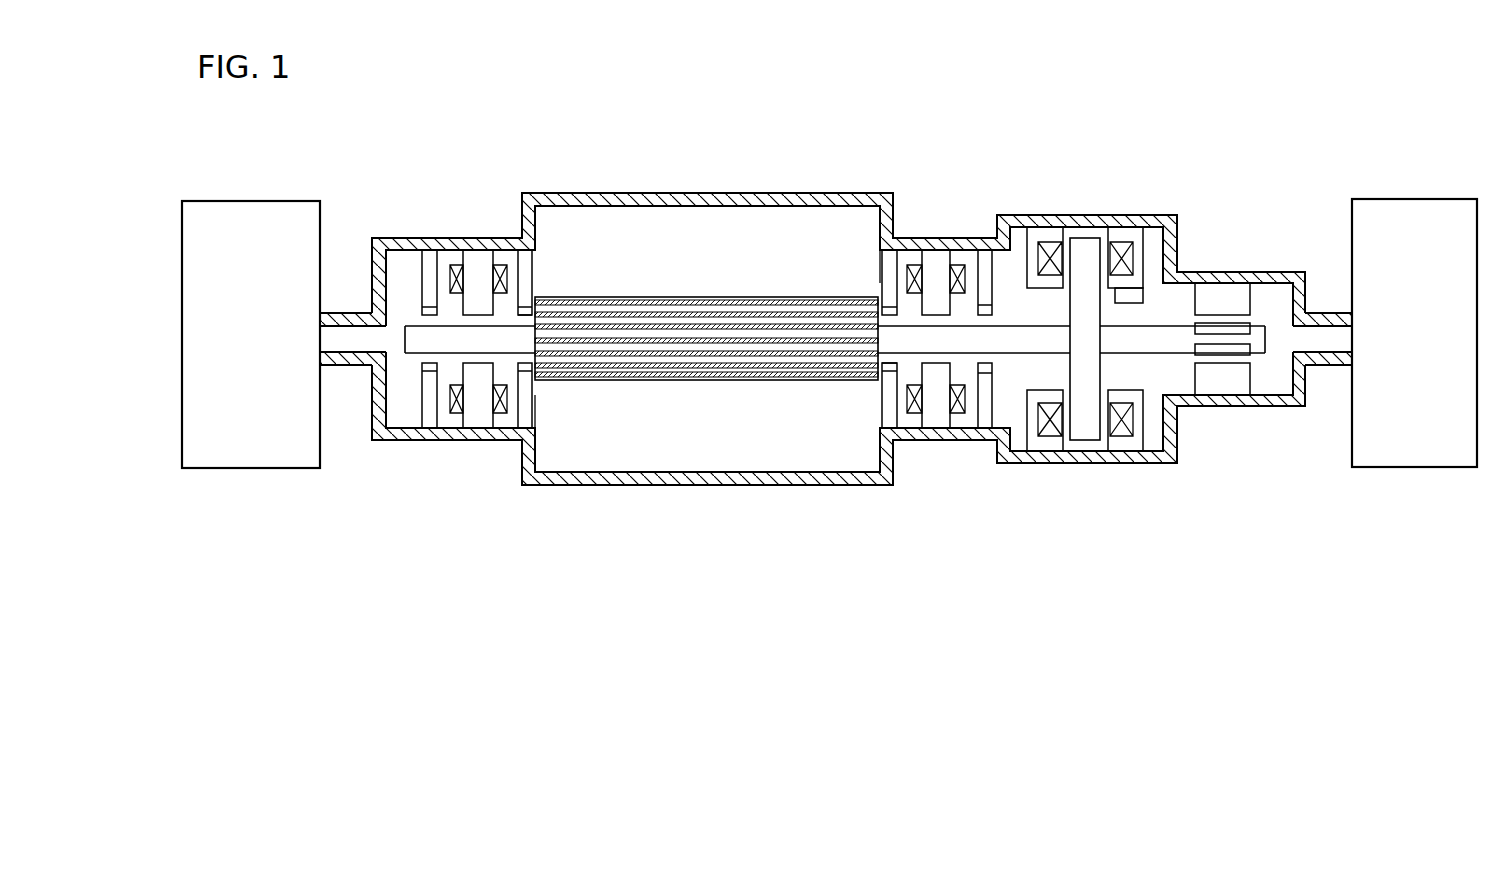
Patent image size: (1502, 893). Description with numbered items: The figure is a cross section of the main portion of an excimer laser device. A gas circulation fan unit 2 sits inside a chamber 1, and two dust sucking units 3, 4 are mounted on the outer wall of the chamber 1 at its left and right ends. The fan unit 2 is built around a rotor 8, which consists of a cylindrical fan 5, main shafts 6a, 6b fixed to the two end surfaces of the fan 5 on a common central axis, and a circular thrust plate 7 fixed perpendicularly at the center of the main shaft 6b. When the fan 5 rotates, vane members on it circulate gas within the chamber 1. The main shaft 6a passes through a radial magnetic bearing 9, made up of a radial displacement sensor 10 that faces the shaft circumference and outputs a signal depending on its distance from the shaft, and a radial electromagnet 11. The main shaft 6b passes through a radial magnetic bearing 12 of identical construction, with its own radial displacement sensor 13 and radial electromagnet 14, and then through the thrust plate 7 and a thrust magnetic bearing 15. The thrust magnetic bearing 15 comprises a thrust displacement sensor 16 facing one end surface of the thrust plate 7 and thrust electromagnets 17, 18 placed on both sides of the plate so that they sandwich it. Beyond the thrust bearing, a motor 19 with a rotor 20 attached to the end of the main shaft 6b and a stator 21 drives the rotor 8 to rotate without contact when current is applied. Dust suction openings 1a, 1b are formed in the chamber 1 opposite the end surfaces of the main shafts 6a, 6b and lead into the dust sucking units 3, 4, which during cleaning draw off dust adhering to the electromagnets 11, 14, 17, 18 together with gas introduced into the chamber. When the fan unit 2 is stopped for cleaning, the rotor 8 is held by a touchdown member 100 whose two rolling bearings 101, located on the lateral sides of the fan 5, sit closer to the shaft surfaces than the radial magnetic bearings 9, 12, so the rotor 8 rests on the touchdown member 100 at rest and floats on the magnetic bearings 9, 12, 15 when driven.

The chamber 1 is at (710, 193).
The dust suction opening 1a is at (365, 360).
The dust suction opening 1b is at (1312, 355).
The gas circulation fan unit 2 is at (836, 342).
The dust sucking unit 3 is at (292, 212).
The dust sucking unit 4 is at (1385, 210).
The fan 5 is at (835, 308).
The main shaft 6a is at (519, 333).
The main shaft 6b is at (892, 328).
The thrust plate 7 is at (1083, 430).
The rotor 8 is at (626, 290).
The radial magnetic bearing 9 is at (462, 295).
The radial displacement sensor 10 is at (430, 255).
The radial electromagnet 11 is at (478, 314).
The radial magnetic bearing 12 is at (951, 295).
The radial displacement sensor 13 is at (982, 314).
The radial electromagnet 14 is at (935, 253).
The thrust magnetic bearing 15 is at (1101, 317).
The thrust displacement sensor 16 is at (1145, 236).
The thrust electromagnet 17 is at (1125, 232).
The thrust electromagnet 18 is at (1045, 232).
The motor 19 is at (1223, 297).
The rotor 20 is at (1220, 294).
The stator 21 is at (1238, 292).
The touchdown member 100 is at (880, 258).
The rolling bearing 101 is at (517, 330).